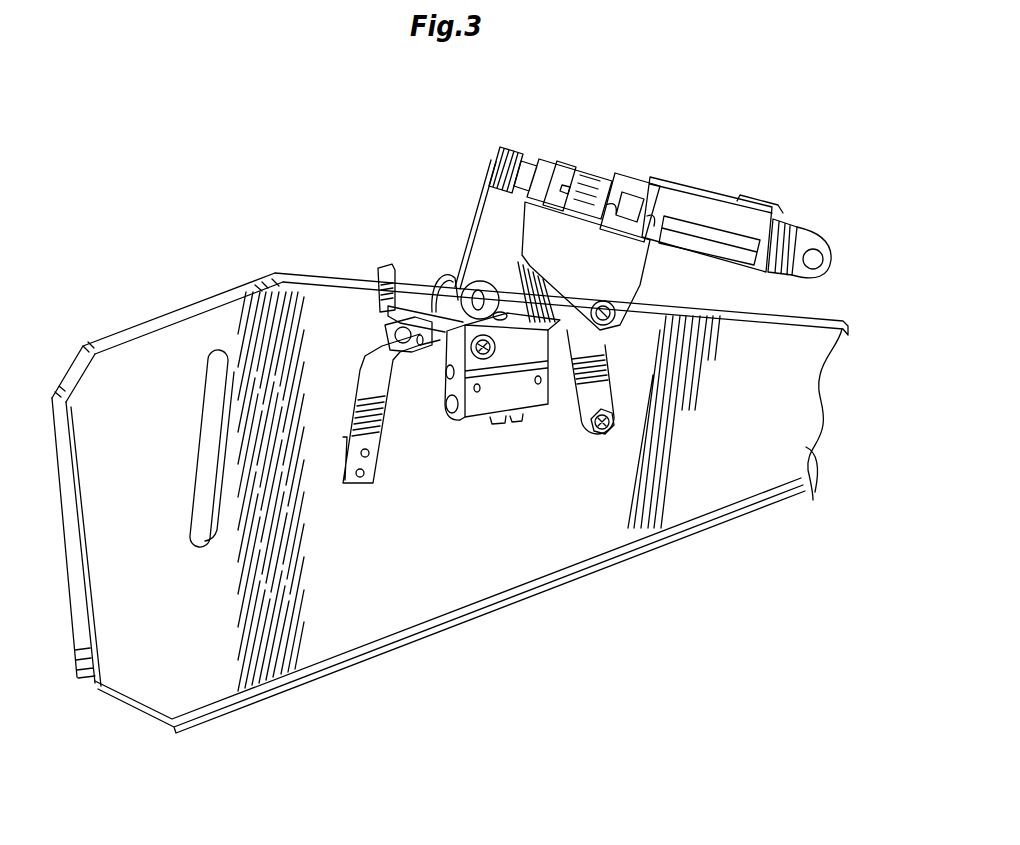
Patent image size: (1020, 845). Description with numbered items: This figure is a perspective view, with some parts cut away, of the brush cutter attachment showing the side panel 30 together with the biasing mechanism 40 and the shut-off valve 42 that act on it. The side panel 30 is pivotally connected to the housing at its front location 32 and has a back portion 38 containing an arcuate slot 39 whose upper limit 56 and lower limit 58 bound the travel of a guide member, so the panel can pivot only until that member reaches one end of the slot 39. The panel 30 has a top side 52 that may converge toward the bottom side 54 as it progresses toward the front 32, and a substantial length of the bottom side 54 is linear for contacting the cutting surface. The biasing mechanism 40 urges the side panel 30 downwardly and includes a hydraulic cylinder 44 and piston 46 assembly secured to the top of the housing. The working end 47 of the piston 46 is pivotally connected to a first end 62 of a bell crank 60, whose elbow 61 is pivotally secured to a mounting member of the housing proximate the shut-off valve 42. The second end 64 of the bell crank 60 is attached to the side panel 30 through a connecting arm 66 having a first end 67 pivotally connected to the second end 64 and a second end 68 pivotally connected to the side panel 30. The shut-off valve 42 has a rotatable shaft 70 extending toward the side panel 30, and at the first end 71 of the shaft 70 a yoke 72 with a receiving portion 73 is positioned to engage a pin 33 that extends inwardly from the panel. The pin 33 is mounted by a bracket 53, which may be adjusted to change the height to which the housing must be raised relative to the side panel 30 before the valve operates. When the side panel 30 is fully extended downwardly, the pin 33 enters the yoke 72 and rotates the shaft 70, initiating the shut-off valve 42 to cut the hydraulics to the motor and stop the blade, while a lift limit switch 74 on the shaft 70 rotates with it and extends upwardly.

The side panel 30 is at (722, 462).
The front location 32 is at (814, 500).
The pin 33 is at (262, 291).
The back portion 38 is at (80, 630).
The arcuate slot 39 is at (140, 327).
The biasing mechanism 40 is at (433, 248).
The shut-off valve 42 is at (517, 390).
The cylinder 44 is at (706, 205).
The piston 46 is at (628, 195).
The working end 47 is at (538, 165).
The top side 52 is at (290, 281).
The bracket 53 is at (345, 420).
The bottom side 54 is at (448, 632).
The upper limit 56 is at (210, 427).
The lower limit 58 is at (203, 548).
The bell crank 60 is at (492, 240).
The elbow 61 is at (458, 285).
The first end 62 is at (492, 158).
The second end 64 is at (613, 298).
The connecting arm 66 is at (614, 335).
The first end 67 is at (603, 300).
The second end 68 is at (610, 434).
The rotatable shaft 70 is at (440, 293).
The first end 71 is at (405, 280).
The yoke 72 is at (452, 385).
The receiving portion 73 is at (430, 350).
The lift limit switch 74 is at (398, 345).